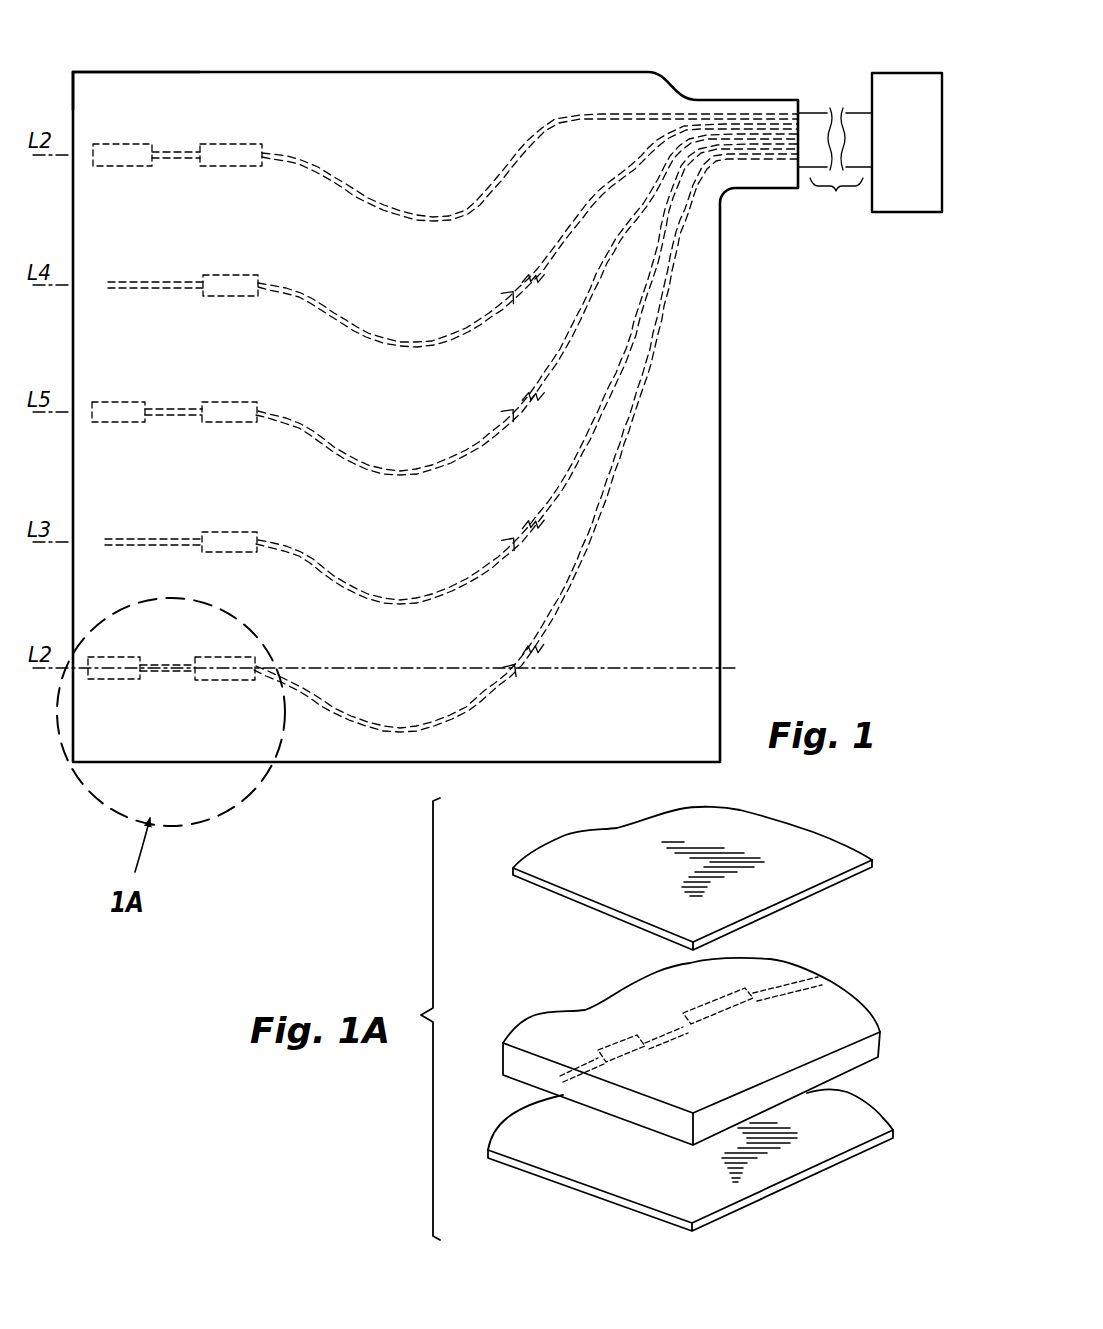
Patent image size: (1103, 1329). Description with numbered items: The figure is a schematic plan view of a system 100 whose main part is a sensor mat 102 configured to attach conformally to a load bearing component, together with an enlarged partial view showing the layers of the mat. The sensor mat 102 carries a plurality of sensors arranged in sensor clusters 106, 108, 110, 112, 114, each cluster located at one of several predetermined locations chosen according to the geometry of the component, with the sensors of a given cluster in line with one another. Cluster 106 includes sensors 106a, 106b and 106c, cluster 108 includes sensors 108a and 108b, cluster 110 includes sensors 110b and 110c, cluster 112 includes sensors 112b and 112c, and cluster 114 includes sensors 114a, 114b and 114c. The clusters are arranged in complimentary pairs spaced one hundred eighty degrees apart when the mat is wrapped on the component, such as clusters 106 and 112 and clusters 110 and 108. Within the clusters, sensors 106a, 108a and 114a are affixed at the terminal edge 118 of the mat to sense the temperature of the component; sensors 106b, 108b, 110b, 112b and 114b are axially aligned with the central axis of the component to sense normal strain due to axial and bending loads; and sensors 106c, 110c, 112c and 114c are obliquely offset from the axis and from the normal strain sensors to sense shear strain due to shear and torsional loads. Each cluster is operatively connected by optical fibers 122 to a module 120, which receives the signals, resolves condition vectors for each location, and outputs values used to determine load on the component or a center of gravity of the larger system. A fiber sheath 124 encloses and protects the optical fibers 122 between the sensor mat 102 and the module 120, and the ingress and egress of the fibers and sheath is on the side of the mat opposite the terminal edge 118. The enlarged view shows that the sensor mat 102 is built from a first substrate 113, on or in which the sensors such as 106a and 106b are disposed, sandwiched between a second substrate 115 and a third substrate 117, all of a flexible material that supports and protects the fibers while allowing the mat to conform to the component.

In FIG. 1, the system 100 is at (152, 70).
In FIG. 1, the sensor mat 102 is at (358, 86).
In FIG. 1, the sensor cluster 106 is at (141, 692).
In FIG. 1, the temperature sensor 106a is at (117, 665).
In FIG. 1A, the temperature sensor 106a is at (600, 1055).
In FIG. 1, the normal strain sensor 106b is at (236, 682).
In FIG. 1A, the normal strain sensor 106b is at (736, 1000).
In FIG. 1, the shear strain sensor 106c is at (505, 664).
In FIG. 1, the sensor cluster 108 is at (158, 173).
In FIG. 1, the temperature sensor 108a is at (116, 148).
In FIG. 1, the normal strain sensor 108b is at (226, 150).
In FIG. 1, the sensor cluster 110 is at (157, 555).
In FIG. 1, the normal strain sensor 110b is at (219, 537).
In FIG. 1, the shear strain sensor 110c is at (503, 530).
In FIG. 1, the sensor cluster 112 is at (157, 298).
In FIG. 1, the normal strain sensor 112b is at (220, 280).
In FIG. 1, the shear strain sensor 112c is at (503, 277).
In FIG. 1, the sensor cluster 114 is at (154, 426).
In FIG. 1, the temperature sensor 114a is at (113, 406).
In FIG. 1, the normal strain sensor 114b is at (218, 406).
In FIG. 1, the shear strain sensor 114c is at (506, 408).
In FIG. 1A, the first substrate 113 is at (845, 1033).
In FIG. 1A, the second substrate 115 is at (837, 853).
In FIG. 1A, the third substrate 117 is at (847, 1128).
In FIG. 1, the terminal edge 118 is at (70, 100).
In FIG. 1, the module 120 is at (920, 153).
In FIG. 1, the optical fibers 122 is at (748, 128).
In FIG. 1, the fiber sheath 124 is at (838, 196).